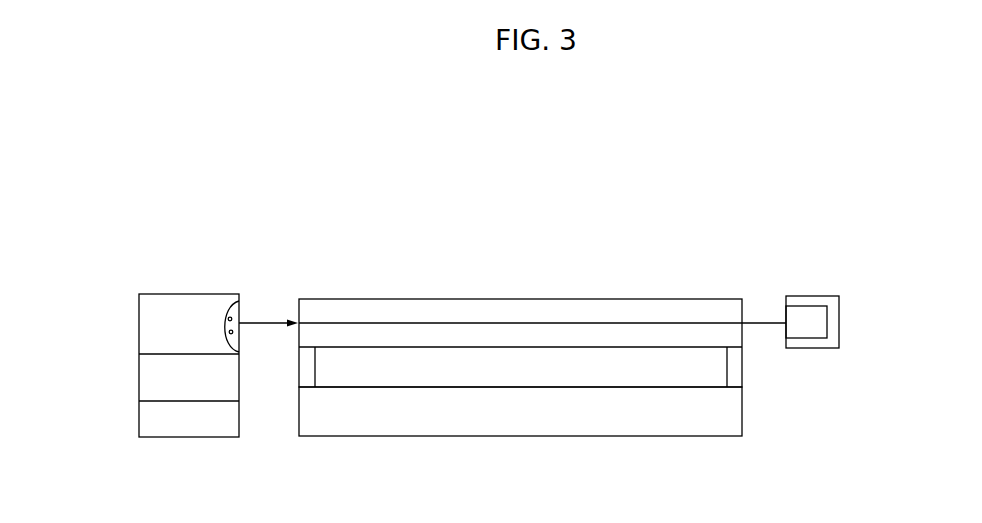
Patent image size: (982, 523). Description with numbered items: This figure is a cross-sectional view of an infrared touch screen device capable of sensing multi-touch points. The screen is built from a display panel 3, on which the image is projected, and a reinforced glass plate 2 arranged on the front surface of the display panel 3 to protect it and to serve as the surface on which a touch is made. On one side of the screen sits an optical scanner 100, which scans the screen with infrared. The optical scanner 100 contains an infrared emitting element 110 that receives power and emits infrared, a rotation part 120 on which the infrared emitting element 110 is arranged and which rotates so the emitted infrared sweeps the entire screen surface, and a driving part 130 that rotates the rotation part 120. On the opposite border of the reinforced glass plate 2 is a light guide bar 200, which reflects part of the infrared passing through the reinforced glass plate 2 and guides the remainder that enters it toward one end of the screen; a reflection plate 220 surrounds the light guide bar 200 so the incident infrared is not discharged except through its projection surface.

The optical scanner 100 is at (177, 278).
The infrared emitting element 110 is at (240, 307).
The rotation part 120 is at (139, 324).
The driving part 130 is at (139, 416).
The reinforced glass plate 2 is at (500, 299).
The display panel 3 is at (523, 436).
The light guide bar 200 is at (851, 320).
The reflection plate 220 is at (818, 296).